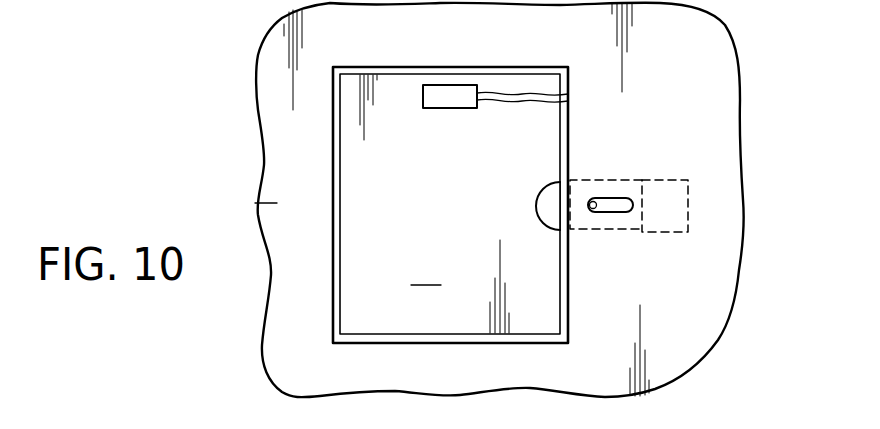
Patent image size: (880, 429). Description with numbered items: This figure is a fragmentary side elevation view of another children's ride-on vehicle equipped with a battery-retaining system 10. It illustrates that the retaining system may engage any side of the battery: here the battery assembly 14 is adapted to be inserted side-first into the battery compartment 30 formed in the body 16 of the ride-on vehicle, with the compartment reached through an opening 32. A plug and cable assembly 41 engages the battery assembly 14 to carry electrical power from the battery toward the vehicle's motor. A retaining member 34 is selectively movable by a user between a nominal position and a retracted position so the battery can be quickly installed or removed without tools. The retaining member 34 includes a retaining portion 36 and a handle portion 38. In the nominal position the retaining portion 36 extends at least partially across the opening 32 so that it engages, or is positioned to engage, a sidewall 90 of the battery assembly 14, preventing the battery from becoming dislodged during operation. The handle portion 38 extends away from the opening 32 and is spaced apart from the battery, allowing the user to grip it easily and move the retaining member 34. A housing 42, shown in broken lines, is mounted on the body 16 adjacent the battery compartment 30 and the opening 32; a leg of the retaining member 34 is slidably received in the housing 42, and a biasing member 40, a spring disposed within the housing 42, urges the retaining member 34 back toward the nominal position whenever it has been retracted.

The battery-retaining system 10 is at (666, 81).
The battery assembly 14 is at (373, 214).
The vehicle body 16 is at (268, 193).
The battery compartment 30 is at (330, 294).
The opening 32 is at (333, 318).
The retaining member 34 is at (542, 230).
The retaining portion 36 is at (534, 208).
The handle portion 38 is at (594, 209).
The biasing member 40 is at (683, 220).
The plug and cable assembly 41 is at (455, 85).
The housing 42 is at (668, 190).
The sidewall 90 is at (426, 275).